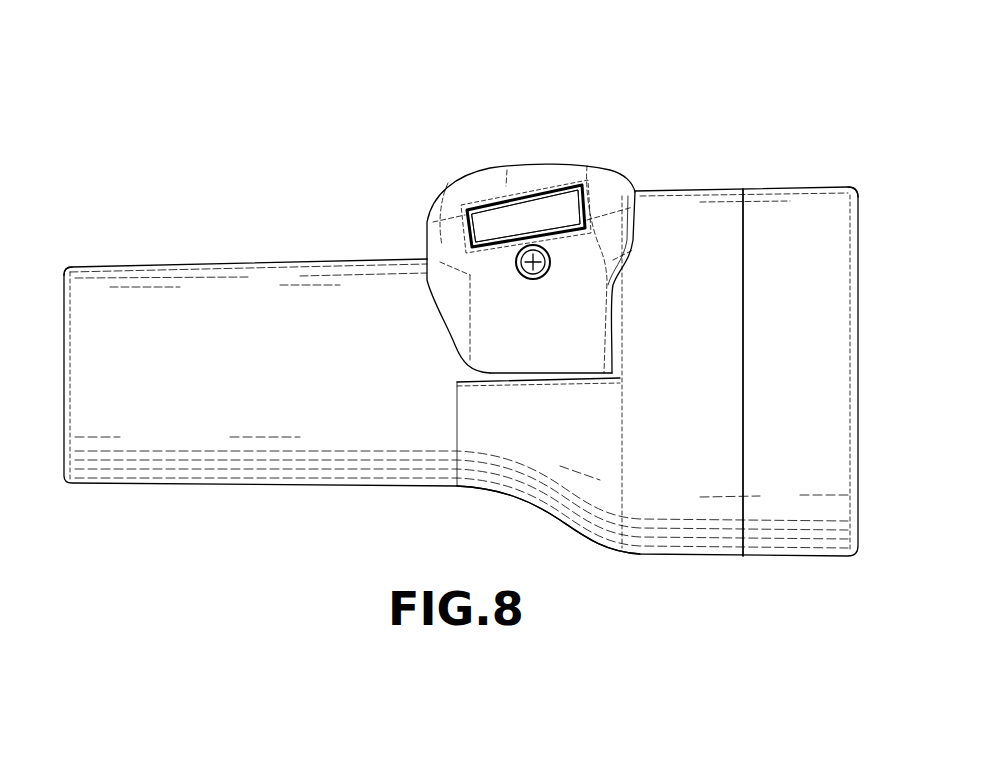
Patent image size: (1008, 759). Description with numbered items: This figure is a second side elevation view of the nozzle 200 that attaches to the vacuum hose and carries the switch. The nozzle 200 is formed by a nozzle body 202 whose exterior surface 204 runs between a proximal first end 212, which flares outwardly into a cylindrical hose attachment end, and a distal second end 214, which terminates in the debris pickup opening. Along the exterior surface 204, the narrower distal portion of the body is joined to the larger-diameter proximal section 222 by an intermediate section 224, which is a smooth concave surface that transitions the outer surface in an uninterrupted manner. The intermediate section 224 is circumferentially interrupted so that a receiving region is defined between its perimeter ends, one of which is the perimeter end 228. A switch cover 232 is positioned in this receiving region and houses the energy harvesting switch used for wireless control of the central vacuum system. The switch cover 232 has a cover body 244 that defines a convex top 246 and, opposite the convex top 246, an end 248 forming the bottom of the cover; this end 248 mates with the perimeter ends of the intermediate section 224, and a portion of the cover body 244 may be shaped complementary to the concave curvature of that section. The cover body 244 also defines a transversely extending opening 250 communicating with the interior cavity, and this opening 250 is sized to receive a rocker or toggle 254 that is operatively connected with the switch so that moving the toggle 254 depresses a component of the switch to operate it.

The nozzle 200 is at (270, 250).
The nozzle body 202 is at (307, 484).
The exterior surface 204 is at (275, 382).
The proximal first end 212 is at (860, 203).
The distal second end 214 is at (63, 287).
The proximal section 222 is at (700, 557).
The intermediate section 224 is at (553, 513).
The perimeter end 228 is at (595, 382).
The switch cover 232 is at (495, 242).
The cover body 244 is at (483, 170).
The convex top 246 is at (541, 163).
The end 248 is at (583, 372).
The transversely extending opening 250 is at (460, 242).
The toggle 254 is at (535, 208).